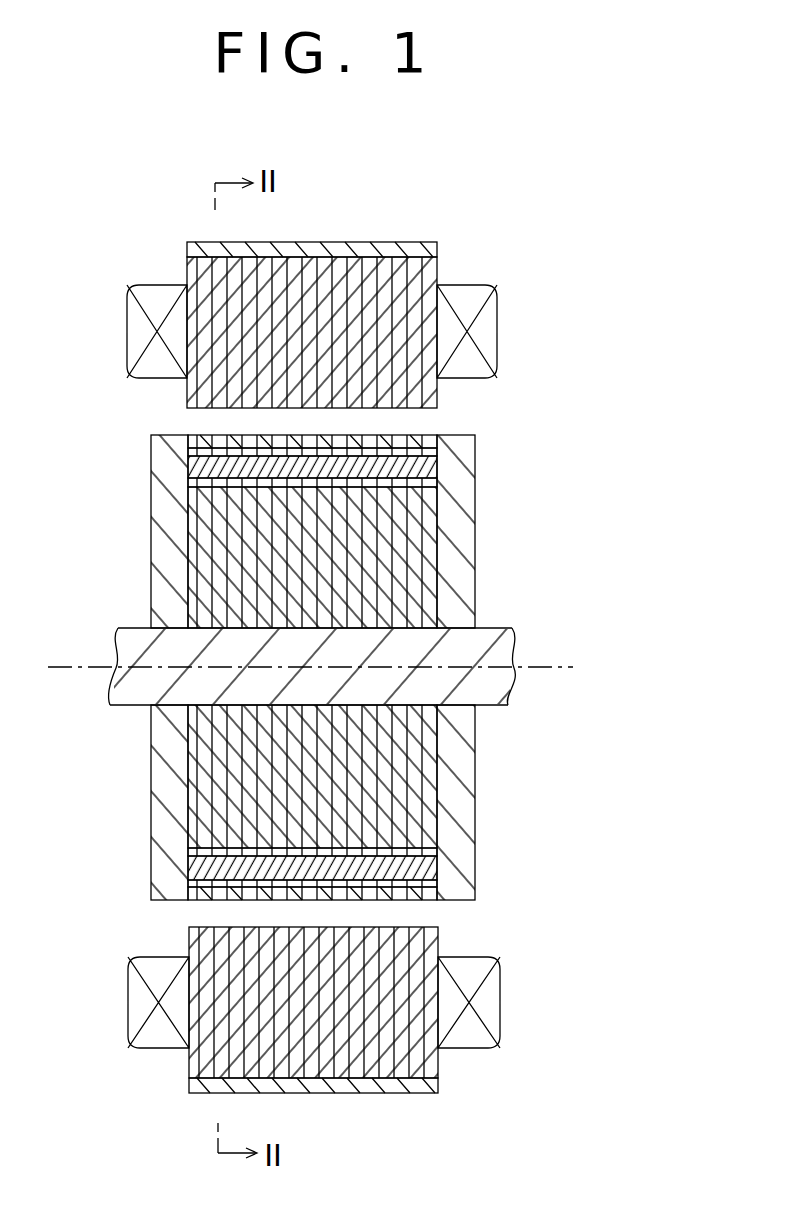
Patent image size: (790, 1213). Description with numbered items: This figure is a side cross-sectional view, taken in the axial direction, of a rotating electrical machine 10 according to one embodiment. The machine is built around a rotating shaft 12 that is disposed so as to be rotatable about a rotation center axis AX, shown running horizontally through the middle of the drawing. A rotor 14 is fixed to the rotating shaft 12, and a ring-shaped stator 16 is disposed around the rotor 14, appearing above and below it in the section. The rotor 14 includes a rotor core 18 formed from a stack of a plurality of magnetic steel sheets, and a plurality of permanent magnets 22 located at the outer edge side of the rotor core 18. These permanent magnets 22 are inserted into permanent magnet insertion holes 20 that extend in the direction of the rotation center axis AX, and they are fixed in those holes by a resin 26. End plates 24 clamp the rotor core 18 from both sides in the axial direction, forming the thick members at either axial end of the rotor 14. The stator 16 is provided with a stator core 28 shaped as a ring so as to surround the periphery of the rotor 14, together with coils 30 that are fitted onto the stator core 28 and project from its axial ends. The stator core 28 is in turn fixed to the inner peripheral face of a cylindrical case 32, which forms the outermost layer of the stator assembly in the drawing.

The rotating electrical machine 10 is at (537, 228).
The rotating shaft 12 is at (490, 706).
The rotor 14 is at (568, 443).
The stator 16 is at (590, 303).
The rotor core 18 is at (437, 518).
The permanent magnet insertion holes 20 is at (190, 518).
The permanent magnets 22 is at (437, 453).
The end plates 24 is at (151, 590).
The resin 26 is at (188, 468).
The stator core 28 is at (437, 394).
The coils 30 is at (500, 325).
The case 32 is at (390, 242).
The rotation center axis AX is at (573, 665).